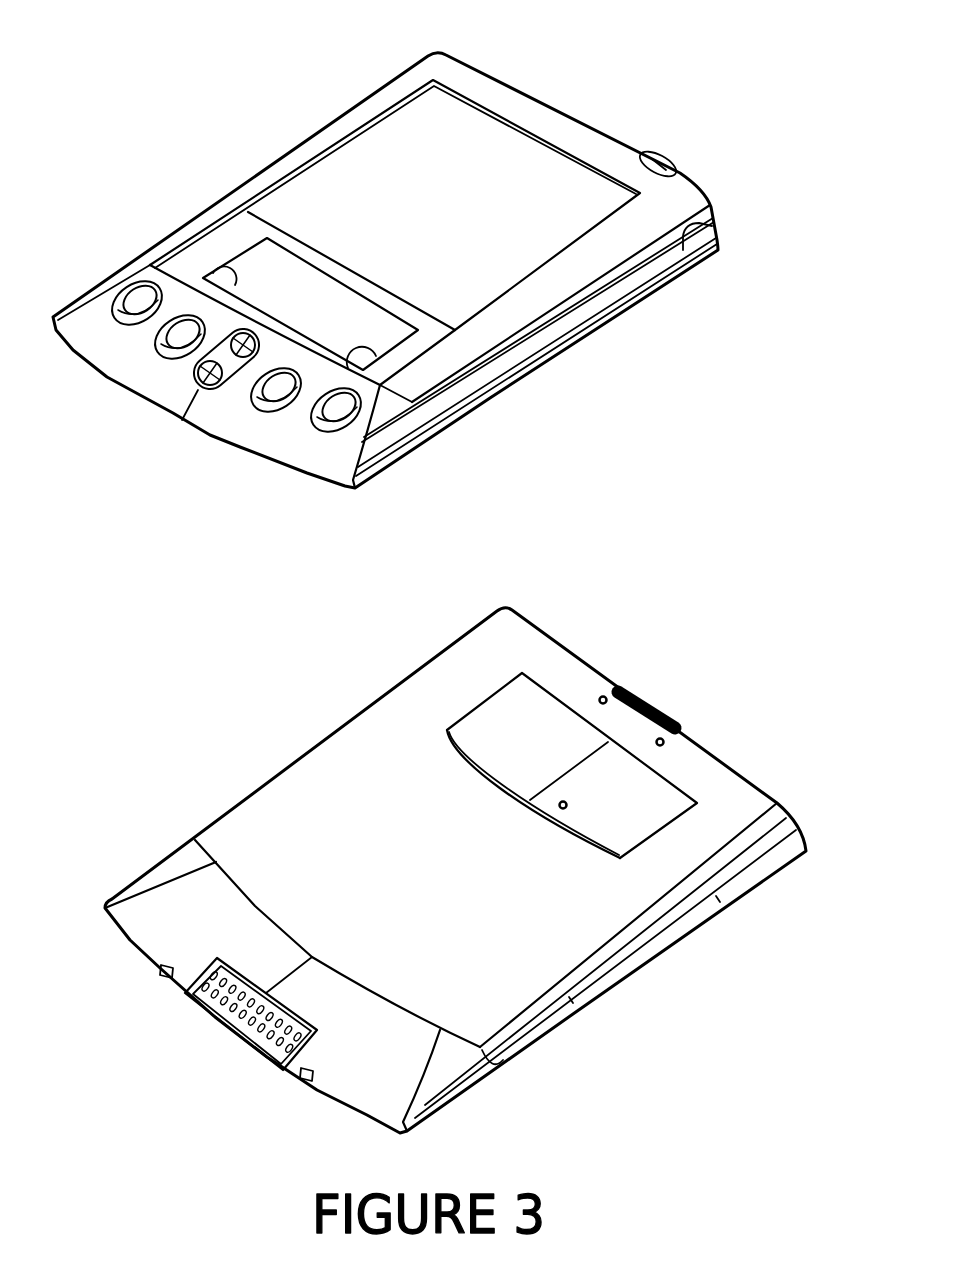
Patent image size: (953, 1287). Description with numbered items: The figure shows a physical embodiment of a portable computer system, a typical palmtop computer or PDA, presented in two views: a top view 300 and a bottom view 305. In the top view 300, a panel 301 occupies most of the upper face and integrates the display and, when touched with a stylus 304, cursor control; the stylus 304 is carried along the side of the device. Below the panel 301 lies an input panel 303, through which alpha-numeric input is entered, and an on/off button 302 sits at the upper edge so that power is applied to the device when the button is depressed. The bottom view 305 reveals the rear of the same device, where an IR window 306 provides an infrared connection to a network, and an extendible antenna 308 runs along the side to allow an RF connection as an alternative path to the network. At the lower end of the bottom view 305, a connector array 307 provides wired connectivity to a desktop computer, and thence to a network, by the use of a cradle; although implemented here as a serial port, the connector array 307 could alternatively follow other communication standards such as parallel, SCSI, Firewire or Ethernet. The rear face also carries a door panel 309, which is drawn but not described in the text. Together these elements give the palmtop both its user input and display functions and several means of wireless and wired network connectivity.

The top view 300 is at (273, 158).
The panel 301 is at (450, 193).
The on/off button 302 is at (655, 158).
The input panel 303 is at (283, 305).
The stylus 304 is at (548, 327).
The bottom view 305 is at (207, 792).
The IR window 306 is at (667, 705).
The connector array 307 is at (203, 1038).
The extendible antenna 308 is at (720, 902).
The battery door 309 is at (600, 797).